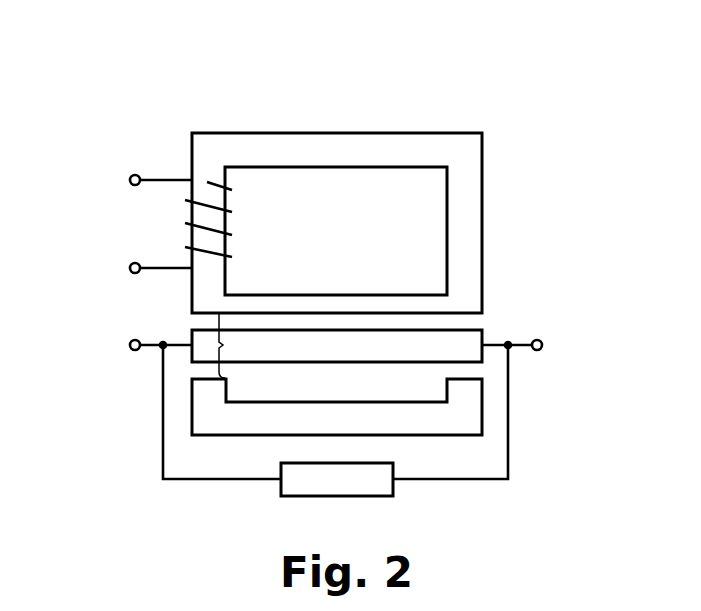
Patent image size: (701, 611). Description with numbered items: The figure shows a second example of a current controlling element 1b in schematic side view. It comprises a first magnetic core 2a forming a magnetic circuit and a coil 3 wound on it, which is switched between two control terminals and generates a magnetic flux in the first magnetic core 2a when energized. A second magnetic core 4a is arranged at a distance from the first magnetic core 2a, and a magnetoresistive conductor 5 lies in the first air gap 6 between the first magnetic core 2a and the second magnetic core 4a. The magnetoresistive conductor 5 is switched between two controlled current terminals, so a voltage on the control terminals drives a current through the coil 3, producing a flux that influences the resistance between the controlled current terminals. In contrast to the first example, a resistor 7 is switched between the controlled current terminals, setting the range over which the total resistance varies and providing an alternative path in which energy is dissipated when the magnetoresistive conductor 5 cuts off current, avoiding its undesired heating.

The current controlling element 1b is at (128, 60).
The first magnetic core 2a is at (435, 147).
The coil 3 is at (207, 182).
The magnetoresistive conductor 5 is at (468, 343).
The first air gap 6 is at (234, 346).
The second magnetic core 4a is at (468, 408).
The resistor 7 is at (378, 482).